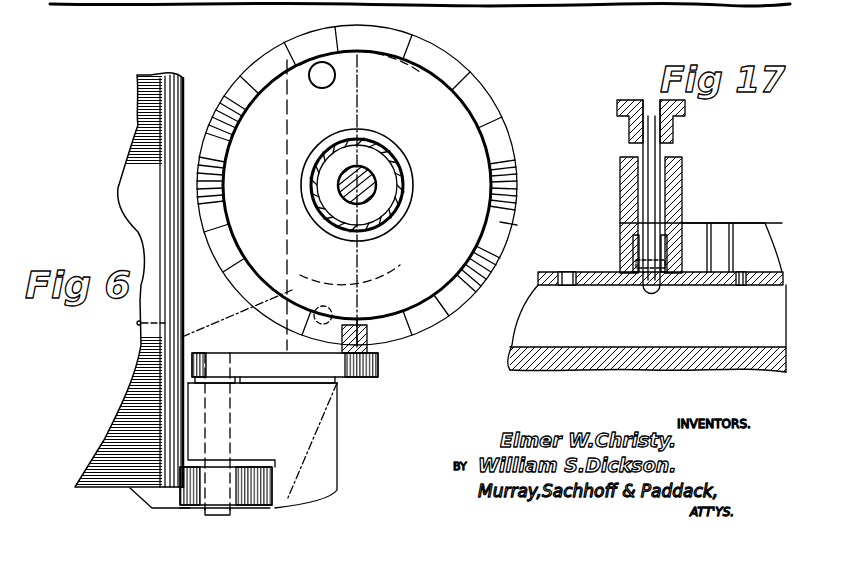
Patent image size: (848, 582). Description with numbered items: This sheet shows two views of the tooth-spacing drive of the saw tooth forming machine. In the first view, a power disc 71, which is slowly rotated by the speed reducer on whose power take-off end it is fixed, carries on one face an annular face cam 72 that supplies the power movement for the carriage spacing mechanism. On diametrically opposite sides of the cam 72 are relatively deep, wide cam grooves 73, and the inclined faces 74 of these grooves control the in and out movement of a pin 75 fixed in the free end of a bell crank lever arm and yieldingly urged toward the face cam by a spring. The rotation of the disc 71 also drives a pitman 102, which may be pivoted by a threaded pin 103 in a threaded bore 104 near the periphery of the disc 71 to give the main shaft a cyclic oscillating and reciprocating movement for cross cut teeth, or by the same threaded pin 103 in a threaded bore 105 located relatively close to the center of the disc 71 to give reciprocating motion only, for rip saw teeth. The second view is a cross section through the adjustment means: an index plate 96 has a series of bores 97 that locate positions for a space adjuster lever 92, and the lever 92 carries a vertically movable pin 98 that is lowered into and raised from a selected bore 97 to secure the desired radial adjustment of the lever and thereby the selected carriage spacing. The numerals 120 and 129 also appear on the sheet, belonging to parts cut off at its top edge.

In FIG. 6, the power disc 71 is at (437, 118).
In FIG. 6, the annular face cam 72 is at (448, 52).
In FIG. 6, the cam grooves 73 is at (503, 222).
In FIG. 6, the inclined faces 74 is at (487, 125).
In FIG. 6, the pin 75 is at (370, 347).
In FIG. 6, the pitman 102 is at (362, 108).
In FIG. 6, the threaded pin 103 is at (322, 75).
In FIG. 6, the threaded bore 104 is at (288, 68).
In FIG. 6, the threaded bore 105 is at (382, 226).
In FIG. 17, the space adjuster lever 92 is at (680, 198).
In FIG. 17, the index plate 96 is at (600, 272).
In FIG. 17, the bores 97 is at (560, 272).
In FIG. 17, the vertically movable pin 98 is at (655, 152).
In FIG. 17, the lever 120 is at (643, 0).
In FIG. 17, the link 129 is at (668, 0).